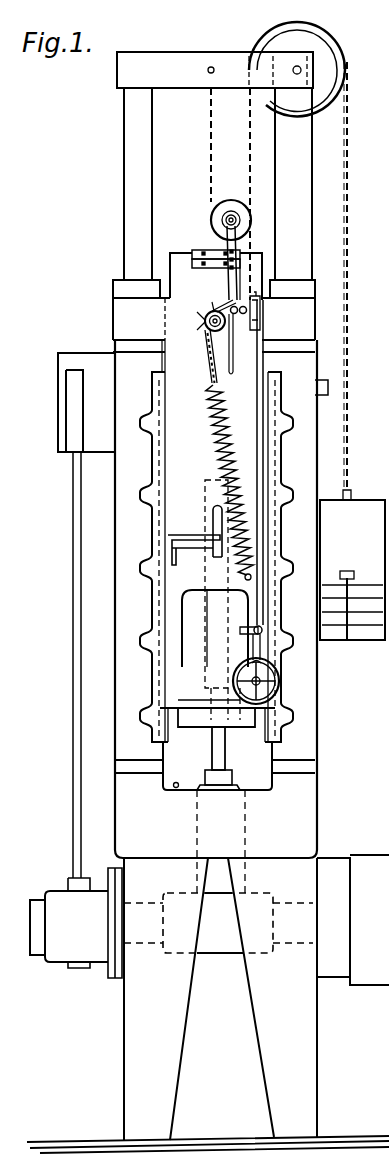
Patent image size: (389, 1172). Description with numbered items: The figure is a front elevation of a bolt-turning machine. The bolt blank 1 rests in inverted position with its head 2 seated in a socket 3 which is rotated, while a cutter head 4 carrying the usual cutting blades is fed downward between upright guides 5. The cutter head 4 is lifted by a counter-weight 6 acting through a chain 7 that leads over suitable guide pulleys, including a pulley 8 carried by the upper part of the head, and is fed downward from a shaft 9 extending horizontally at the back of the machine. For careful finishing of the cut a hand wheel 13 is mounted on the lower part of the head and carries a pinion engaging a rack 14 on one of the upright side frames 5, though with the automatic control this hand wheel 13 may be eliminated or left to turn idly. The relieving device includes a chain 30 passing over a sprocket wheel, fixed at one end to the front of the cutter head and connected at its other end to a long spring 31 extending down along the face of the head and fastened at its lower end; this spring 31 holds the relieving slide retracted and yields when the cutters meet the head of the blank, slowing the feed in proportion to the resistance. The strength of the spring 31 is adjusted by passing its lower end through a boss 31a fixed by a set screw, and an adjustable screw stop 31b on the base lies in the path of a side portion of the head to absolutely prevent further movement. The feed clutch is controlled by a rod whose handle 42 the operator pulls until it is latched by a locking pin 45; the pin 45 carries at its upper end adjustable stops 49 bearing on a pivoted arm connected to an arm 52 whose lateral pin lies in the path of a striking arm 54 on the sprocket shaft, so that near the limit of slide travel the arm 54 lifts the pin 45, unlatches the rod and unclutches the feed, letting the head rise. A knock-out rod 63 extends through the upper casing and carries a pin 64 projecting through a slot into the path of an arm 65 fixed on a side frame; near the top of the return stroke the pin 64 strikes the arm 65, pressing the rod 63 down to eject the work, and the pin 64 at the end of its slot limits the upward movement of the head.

The bolt blank 1 is at (226, 741).
The head 2 is at (236, 776).
The socket 3 is at (243, 790).
The head 4 is at (208, 597).
The upright guides 5 is at (216, 557).
The counter-weight 6 is at (352, 565).
The chain 7 is at (349, 175).
The pulley 8 is at (236, 200).
The shaft 9 is at (329, 381).
The hand wheel 13 is at (277, 690).
The rack 14 is at (279, 656).
The chain 30 is at (207, 372).
The spring 31 is at (212, 427).
The boss 31a is at (251, 574).
The adjustable screw stop 31b is at (178, 783).
The handle 42 is at (260, 626).
The locking pin 45 is at (264, 364).
The adjustable stops 49 is at (262, 301).
The arm 52 is at (244, 304).
The striking arm 54 is at (215, 293).
The knock-out rod 63 is at (205, 620).
The pin 64 is at (218, 560).
The arm 65 is at (184, 534).